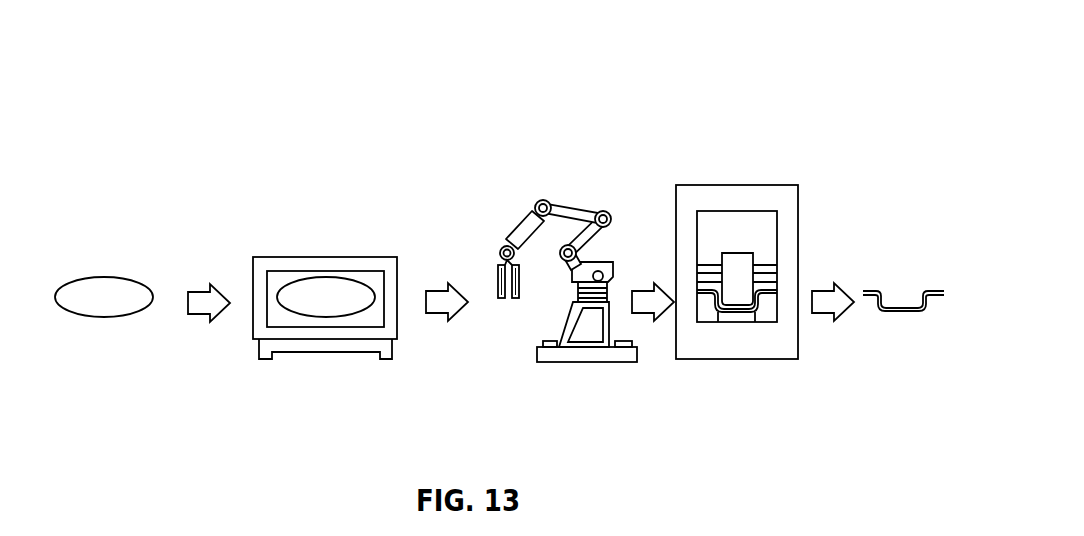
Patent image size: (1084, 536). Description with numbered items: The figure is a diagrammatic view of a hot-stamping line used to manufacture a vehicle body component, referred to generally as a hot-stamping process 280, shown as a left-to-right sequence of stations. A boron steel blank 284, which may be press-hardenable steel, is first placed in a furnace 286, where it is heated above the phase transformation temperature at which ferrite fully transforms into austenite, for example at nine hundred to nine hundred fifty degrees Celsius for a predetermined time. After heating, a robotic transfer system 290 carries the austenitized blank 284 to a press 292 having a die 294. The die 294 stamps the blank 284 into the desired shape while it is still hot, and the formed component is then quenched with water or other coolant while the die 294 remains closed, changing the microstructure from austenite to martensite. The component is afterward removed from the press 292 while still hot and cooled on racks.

The hot-stamping process 280 is at (818, 75).
The boron steel blank 284 is at (101, 276).
The furnace 286 is at (326, 341).
The robotic transfer system 290 is at (574, 210).
The press 292 is at (738, 184).
The die 294 is at (768, 290).